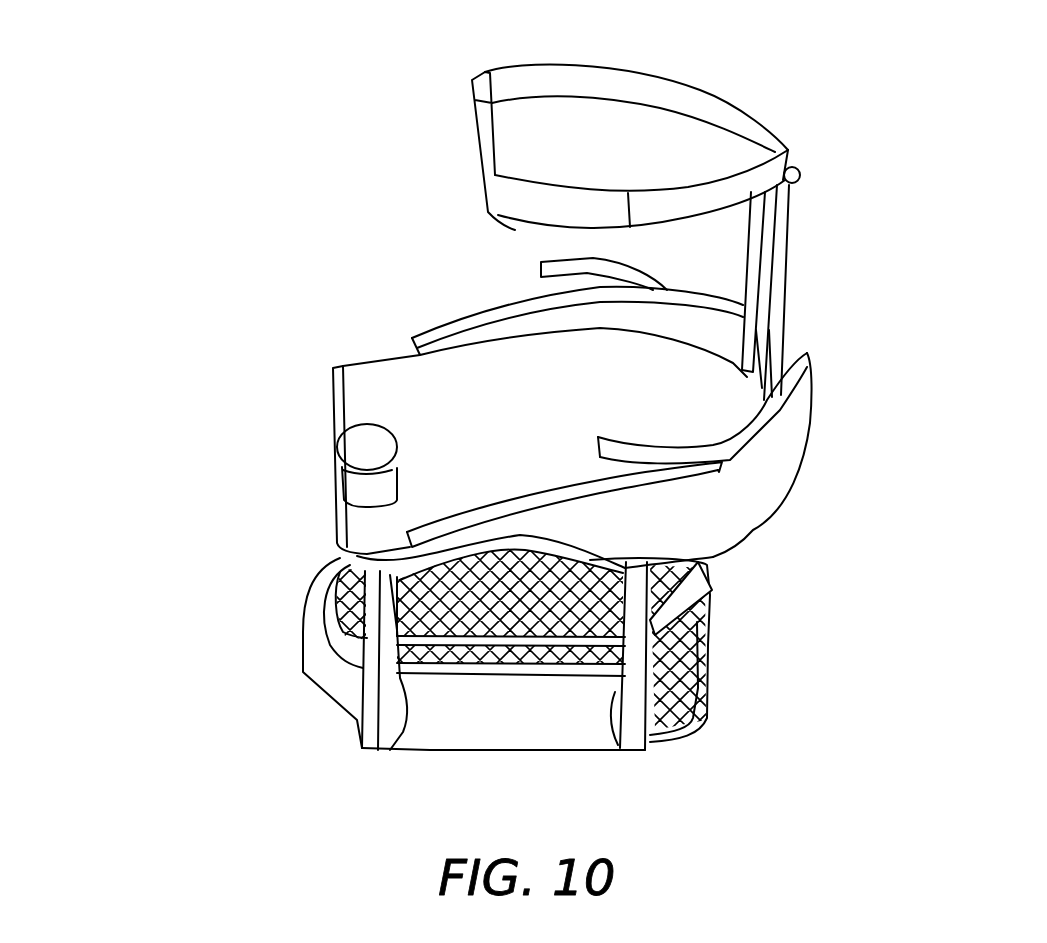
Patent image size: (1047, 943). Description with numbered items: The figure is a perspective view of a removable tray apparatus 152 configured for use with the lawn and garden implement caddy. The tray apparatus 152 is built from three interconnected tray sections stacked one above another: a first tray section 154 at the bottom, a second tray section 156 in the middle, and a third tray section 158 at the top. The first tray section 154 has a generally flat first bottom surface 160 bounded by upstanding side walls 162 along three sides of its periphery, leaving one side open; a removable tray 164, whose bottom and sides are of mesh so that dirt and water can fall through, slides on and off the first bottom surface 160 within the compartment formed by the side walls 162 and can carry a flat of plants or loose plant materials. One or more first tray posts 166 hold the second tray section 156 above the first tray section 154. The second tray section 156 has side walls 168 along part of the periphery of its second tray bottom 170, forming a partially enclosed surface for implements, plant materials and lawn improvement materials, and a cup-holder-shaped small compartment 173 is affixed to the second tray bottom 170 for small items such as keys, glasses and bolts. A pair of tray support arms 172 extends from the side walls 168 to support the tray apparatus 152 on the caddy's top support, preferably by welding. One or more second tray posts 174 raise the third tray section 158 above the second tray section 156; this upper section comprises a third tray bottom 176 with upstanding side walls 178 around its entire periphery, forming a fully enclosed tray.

The tray apparatus 152 is at (867, 300).
The first tray section 154 is at (271, 675).
The second tray section 156 is at (288, 427).
The third tray section 158 is at (441, 150).
The first bottom surface 160 is at (680, 724).
The side walls 162 is at (523, 722).
The removable tray 164 is at (731, 596).
The first tray posts 166 is at (397, 713).
The side walls 168 is at (777, 452).
The second tray bottom 170 is at (385, 382).
The tray support arms 172 is at (540, 268).
The small compartment 173 is at (360, 460).
The second tray posts 174 is at (787, 213).
The third tray bottom 176 is at (685, 133).
The side walls 178 is at (578, 78).